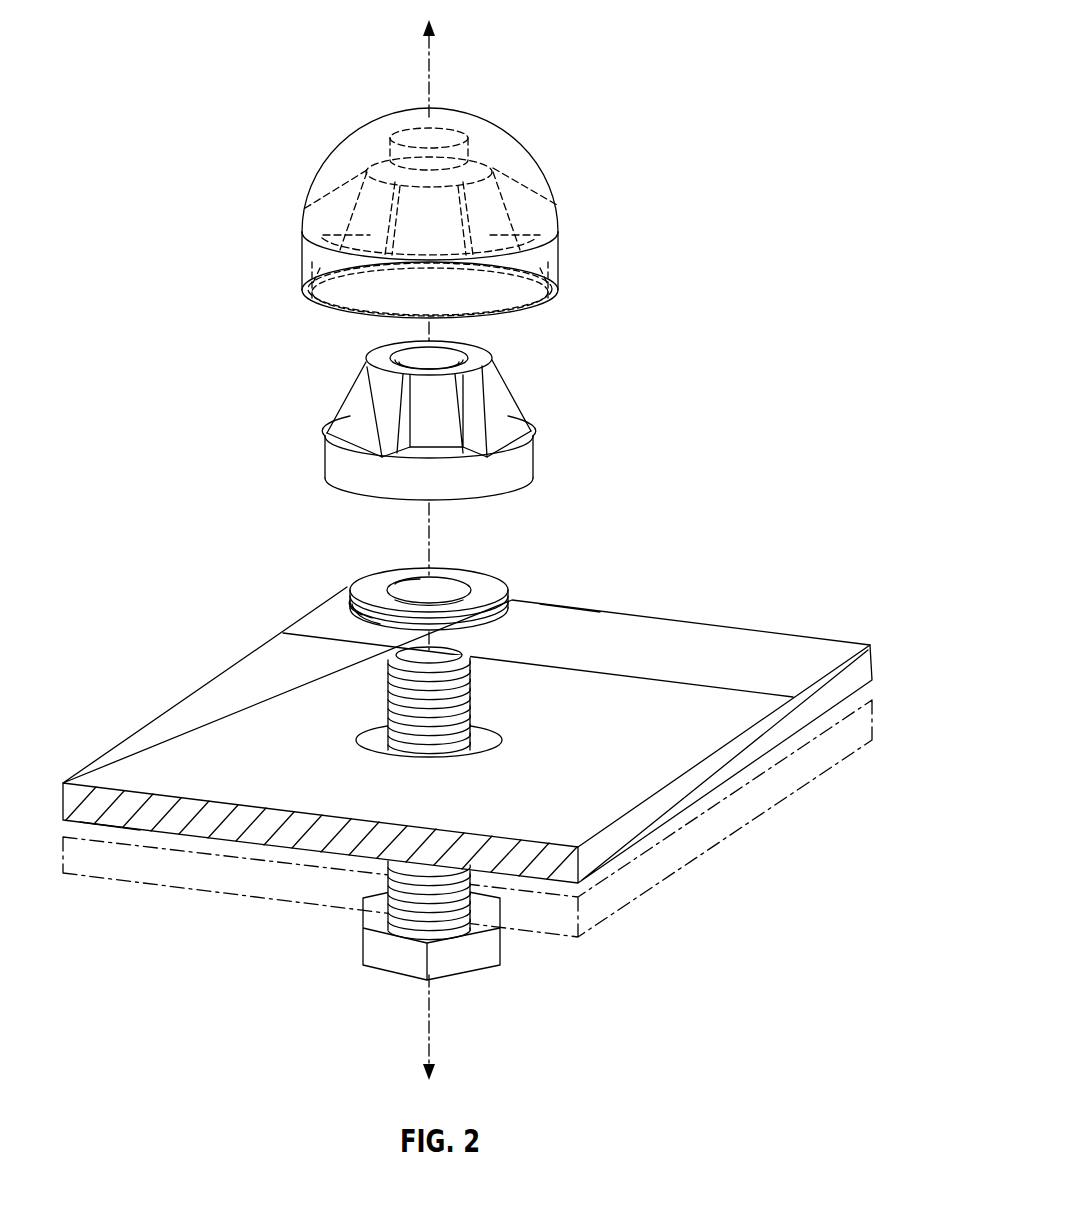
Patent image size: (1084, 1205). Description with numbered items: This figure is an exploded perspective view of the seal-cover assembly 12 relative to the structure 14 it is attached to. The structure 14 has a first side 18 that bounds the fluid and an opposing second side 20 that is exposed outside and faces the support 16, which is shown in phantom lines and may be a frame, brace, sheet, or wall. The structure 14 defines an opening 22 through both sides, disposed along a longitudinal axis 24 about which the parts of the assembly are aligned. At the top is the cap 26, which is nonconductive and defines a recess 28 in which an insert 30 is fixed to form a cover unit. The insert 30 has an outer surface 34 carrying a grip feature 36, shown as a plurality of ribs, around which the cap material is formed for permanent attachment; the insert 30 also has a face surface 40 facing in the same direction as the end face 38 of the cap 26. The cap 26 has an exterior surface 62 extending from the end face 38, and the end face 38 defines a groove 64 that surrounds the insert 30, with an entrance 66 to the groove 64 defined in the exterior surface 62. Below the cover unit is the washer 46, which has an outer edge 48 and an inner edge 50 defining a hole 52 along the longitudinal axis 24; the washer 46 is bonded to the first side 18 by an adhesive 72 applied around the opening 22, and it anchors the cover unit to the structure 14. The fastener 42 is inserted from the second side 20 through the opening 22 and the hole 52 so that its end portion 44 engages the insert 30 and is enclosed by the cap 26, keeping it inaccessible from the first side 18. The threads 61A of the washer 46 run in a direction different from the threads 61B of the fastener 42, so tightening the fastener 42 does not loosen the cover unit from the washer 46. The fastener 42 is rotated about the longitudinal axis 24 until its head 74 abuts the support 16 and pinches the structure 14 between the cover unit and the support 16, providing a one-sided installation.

The seal-cover assembly 12 is at (713, 53).
The structure 14 is at (873, 672).
The support 16 is at (733, 830).
The first side 18 is at (770, 650).
The second side 20 is at (113, 823).
The opening 22 is at (470, 738).
The longitudinal axis 24 is at (432, 78).
The cap 26 is at (223, 195).
The recess 28 is at (536, 163).
The insert 30 is at (578, 383).
The outer surface 34 is at (533, 428).
The grip feature 36 is at (393, 417).
The end face 38 is at (520, 308).
The face surface 40 is at (517, 490).
The fastener 42 is at (363, 925).
The end portion 44 is at (467, 663).
The washer 46 is at (368, 584).
The outer edge 48 is at (355, 618).
The inner edge 50 is at (452, 583).
The hole 52 is at (405, 587).
The threads of the washer 61A is at (360, 623).
The threads of the fastener 61B is at (390, 690).
The exterior surface 62 is at (363, 123).
The groove 64 is at (347, 308).
The entrance 66 is at (302, 282).
The adhesive 72 is at (370, 737).
The head 74 is at (470, 962).